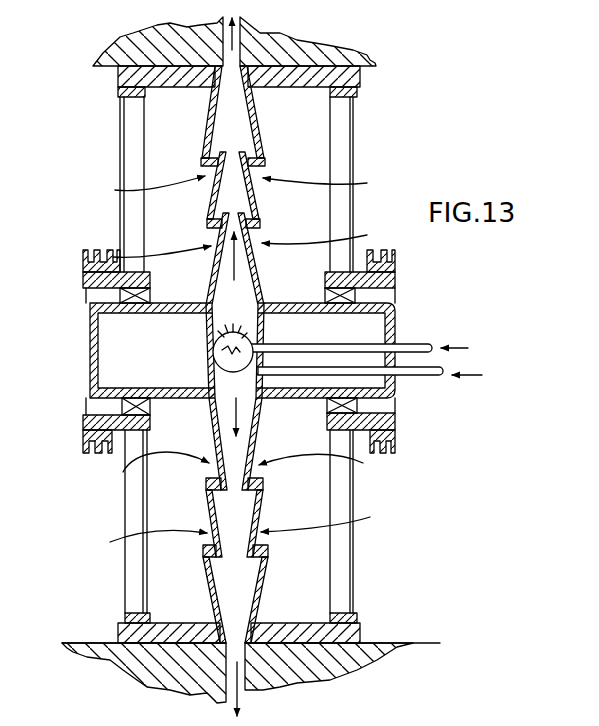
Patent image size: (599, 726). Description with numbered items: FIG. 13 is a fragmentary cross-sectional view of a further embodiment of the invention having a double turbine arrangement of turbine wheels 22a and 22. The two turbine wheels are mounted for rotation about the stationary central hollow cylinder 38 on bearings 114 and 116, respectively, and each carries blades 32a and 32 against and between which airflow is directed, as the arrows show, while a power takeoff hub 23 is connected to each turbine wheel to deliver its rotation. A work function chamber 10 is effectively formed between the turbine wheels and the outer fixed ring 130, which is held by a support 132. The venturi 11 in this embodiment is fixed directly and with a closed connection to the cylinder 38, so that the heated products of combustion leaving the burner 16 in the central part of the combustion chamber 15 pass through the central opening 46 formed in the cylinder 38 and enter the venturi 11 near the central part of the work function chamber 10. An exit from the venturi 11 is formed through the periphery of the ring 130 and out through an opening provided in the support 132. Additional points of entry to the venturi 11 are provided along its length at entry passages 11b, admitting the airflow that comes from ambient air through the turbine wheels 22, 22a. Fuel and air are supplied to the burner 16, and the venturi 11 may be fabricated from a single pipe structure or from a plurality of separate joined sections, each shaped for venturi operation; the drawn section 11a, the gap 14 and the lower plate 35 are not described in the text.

The work function chamber 10 is at (305, 289).
The venturi 11 is at (206, 137).
The lower nozzle section 11a is at (217, 588).
The entry passages 11b is at (207, 240).
The annular air gap 14 is at (213, 470).
The combustion chamber 15 is at (292, 140).
The burner 16 is at (319, 326).
The turbine wheel 22 is at (356, 131).
The turbine wheel 22a is at (118, 126).
The power takeoff hub 23 is at (88, 454).
The blades 32 is at (345, 165).
The blades 32a is at (122, 204).
The lower mounting plate 35 is at (360, 620).
The central hollow cylinder 38 is at (203, 303).
The central opening 46 is at (222, 395).
The bearing 114 is at (120, 404).
The bearing 116 is at (360, 405).
The outer fixed ring 130 is at (350, 81).
The upper support 132 is at (340, 53).